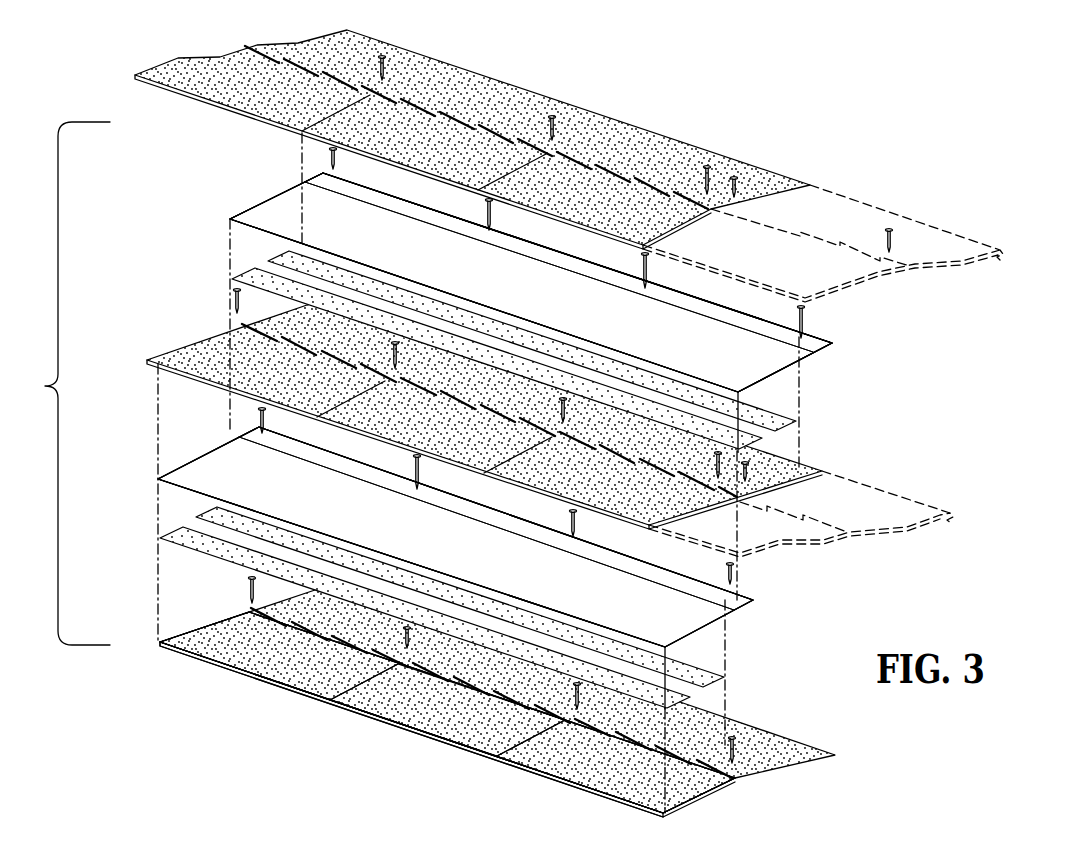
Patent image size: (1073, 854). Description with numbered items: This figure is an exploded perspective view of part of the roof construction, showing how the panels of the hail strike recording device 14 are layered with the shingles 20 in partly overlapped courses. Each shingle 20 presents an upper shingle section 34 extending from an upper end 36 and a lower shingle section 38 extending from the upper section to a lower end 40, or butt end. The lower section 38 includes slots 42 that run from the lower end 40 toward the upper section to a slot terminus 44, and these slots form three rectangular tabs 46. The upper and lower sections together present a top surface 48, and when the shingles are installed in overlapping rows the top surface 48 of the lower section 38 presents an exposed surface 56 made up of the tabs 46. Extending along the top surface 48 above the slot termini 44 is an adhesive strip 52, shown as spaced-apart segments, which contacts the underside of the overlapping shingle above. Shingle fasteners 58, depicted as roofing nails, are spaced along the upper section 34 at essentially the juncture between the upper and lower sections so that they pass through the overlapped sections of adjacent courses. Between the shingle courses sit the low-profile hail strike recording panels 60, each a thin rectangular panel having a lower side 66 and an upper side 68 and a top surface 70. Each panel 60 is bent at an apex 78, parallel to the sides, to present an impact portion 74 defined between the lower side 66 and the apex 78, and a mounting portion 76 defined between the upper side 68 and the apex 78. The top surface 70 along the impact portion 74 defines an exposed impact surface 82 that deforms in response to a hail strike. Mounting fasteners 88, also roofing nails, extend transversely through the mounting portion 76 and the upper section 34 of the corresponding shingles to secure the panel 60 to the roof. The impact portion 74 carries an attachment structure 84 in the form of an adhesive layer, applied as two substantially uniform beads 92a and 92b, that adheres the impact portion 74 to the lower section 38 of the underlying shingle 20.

The hail strike recording device 14 is at (250, 217).
The shingle 20 is at (686, 151).
The upper shingle section 34 is at (599, 501).
The upper end 36 is at (653, 131).
The lower shingle section 38 is at (756, 525).
The lower end 40 is at (160, 645).
The slot 42 is at (540, 735).
The slot terminus 44 is at (567, 732).
The tab 46 is at (247, 663).
The top surface 48 is at (290, 672).
The adhesive strip 52 is at (289, 68).
The exposed surface 56 is at (327, 687).
The shingle fastener 58 is at (553, 116).
The hail strike recording panel 60 is at (466, 441).
The lower side 66 is at (682, 292).
The upper side 68 is at (190, 487).
The top surface 70 is at (292, 200).
The impact portion 74 is at (733, 361).
The mounting portion 76 is at (817, 339).
The apex 78 is at (797, 349).
The exposed impact surface 82 is at (511, 410).
The attachment structure 84 is at (760, 440).
The mounting fastener 88 is at (328, 153).
The adhesive bead 92a is at (283, 257).
The adhesive bead 92b is at (252, 277).